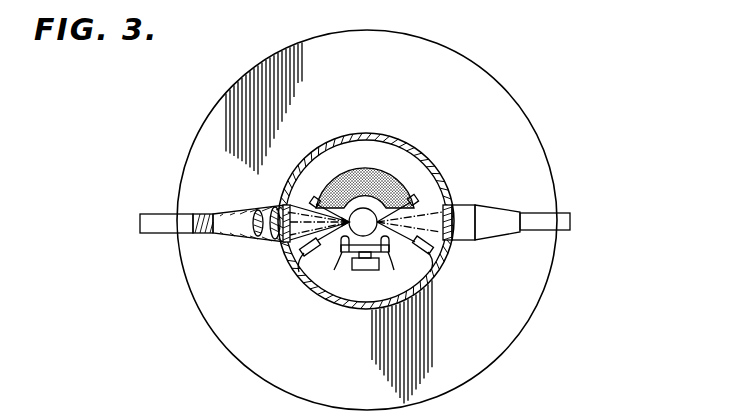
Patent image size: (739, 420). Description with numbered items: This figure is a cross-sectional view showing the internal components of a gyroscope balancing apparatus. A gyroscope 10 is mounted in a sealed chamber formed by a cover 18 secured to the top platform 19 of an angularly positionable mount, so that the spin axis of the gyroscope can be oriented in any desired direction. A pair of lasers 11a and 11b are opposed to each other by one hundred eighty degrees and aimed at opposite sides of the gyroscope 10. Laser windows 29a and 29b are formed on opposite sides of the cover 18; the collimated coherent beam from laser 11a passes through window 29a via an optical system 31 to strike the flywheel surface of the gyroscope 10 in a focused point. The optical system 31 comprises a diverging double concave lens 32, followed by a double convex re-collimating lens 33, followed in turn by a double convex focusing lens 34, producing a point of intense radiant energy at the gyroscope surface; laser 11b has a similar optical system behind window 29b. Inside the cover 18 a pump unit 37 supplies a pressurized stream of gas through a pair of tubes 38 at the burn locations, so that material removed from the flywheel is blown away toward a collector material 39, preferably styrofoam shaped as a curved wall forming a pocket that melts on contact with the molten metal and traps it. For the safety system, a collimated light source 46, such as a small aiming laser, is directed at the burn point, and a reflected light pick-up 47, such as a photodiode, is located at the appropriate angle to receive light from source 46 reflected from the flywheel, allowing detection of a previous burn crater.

The gyroscope 10 is at (363, 222).
The laser 11a is at (165, 234).
The laser 11b is at (565, 213).
The cover 18 is at (348, 138).
The top platform 19 is at (474, 349).
The laser window 29a is at (278, 205).
The laser window 29b is at (460, 205).
The optical system 31 is at (228, 204).
The diverging double concave lens 32 is at (205, 213).
The double convex re-collimating lens 33 is at (247, 214).
The double convex focusing lens 34 is at (256, 238).
The pump unit 37 is at (365, 270).
The tubes 38 is at (365, 260).
The collector material 39 is at (342, 178).
The collimated light source 46 is at (299, 272).
The reflected light pick-up 47 is at (316, 198).